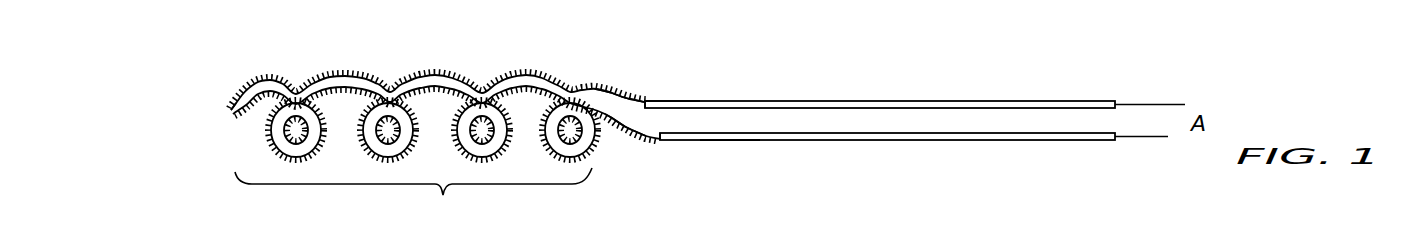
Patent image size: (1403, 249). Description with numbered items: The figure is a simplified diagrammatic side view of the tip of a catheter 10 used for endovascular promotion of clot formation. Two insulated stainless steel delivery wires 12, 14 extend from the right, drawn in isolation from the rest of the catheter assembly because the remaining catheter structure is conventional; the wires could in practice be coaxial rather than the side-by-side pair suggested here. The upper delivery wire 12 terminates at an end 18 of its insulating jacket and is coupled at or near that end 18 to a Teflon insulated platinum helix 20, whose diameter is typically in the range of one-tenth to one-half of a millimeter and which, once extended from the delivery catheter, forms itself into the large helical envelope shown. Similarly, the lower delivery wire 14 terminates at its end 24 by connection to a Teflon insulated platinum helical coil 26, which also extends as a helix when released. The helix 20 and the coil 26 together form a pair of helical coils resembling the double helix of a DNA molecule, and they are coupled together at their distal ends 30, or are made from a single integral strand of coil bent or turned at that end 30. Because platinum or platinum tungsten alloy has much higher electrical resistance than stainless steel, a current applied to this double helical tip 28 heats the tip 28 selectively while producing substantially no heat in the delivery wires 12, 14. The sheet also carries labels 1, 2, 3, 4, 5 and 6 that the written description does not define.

The upper yarn strand 1 is at (360, 53).
The lower yarn strand 2 is at (346, 104).
The upper tube 3 is at (875, 98).
The lower tube 4 is at (882, 146).
The upper tube proximal end 5 is at (662, 91).
The lower tube proximal end 6 is at (724, 148).
The catheter 10 is at (911, 135).
The delivery wire 12 is at (1168, 104).
The delivery wire 14 is at (1148, 137).
The end of insulating jacket 18 is at (638, 98).
The platinum helix 20 is at (632, 96).
The end of delivery wire 24 is at (660, 141).
The platinum helical coil 26 is at (634, 134).
The double helical tip 28 is at (416, 163).
The distal ends 30 is at (230, 110).